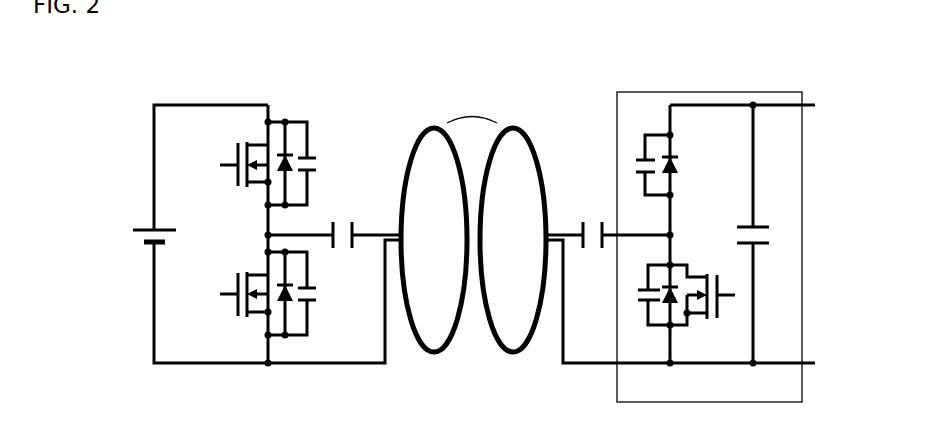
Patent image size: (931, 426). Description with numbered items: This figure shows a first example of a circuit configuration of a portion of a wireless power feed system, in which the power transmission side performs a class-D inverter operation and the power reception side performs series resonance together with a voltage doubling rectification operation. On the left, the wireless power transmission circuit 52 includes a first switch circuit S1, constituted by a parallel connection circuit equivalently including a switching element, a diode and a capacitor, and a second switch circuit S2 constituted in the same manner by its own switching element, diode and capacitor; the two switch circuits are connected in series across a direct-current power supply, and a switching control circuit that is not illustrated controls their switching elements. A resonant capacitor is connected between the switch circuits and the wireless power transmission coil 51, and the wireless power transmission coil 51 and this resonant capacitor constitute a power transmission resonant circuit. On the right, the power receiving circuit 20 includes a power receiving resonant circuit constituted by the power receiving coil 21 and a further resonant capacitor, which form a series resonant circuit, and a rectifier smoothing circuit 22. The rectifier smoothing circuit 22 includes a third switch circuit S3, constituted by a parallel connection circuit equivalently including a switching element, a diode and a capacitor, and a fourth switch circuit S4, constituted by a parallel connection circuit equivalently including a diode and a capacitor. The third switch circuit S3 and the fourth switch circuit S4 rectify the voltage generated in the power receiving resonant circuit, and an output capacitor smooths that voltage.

The wireless power transmission circuit 52 is at (365, 84).
The wireless power transmission coil 51 is at (432, 126).
The power receiving coil 21 is at (513, 126).
The power receiving circuit 20 is at (763, 85).
The rectifier smoothing circuit 22 is at (802, 92).
The first switch circuit S1 is at (254, 347).
The second switch circuit S2 is at (230, 178).
The third switch circuit S3 is at (610, 337).
The fourth switch circuit S4 is at (604, 108).